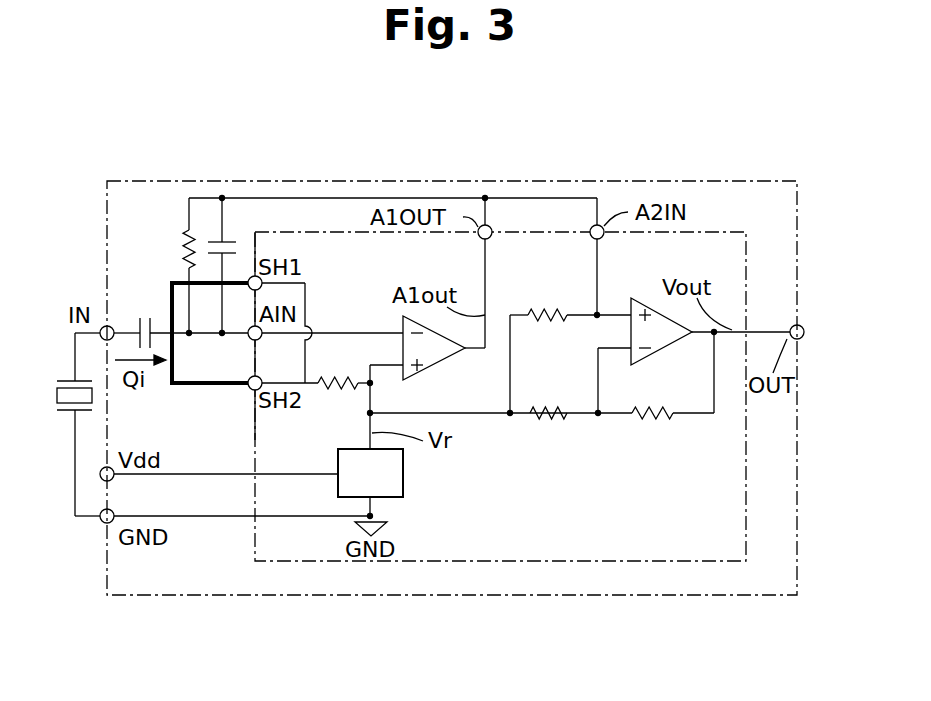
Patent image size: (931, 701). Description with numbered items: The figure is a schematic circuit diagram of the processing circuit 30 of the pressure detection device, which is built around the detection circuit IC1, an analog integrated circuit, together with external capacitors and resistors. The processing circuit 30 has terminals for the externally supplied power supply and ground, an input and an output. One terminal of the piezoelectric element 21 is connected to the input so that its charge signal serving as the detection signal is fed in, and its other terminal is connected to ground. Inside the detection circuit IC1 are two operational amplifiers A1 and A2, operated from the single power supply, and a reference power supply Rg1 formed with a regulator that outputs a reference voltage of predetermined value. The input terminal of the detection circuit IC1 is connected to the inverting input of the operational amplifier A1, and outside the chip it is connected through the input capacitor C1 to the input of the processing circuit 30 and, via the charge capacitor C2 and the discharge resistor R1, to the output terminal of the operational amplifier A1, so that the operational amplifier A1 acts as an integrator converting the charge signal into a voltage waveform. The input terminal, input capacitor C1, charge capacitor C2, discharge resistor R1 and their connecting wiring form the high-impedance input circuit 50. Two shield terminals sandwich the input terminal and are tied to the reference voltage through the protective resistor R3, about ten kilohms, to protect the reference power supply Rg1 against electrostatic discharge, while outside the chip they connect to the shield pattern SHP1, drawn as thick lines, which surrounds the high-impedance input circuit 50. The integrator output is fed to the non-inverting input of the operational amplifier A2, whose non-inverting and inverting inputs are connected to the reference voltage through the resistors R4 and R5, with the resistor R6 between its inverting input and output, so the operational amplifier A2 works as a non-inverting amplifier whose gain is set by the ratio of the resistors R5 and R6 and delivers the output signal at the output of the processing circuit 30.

The high-impedance input circuit 50 is at (168, 210).
The processing circuit 30 is at (625, 181).
The piezoelectric element 21 is at (67, 413).
The detection circuit IC1 is at (652, 561).
The input capacitor C1 is at (181, 321).
The charge capacitor C2 is at (232, 266).
The discharge resistor R1 is at (171, 267).
The shield pattern SHP1 is at (210, 386).
The protective resistor R3 is at (317, 370).
The resistor R4 is at (570, 349).
The resistor R5 is at (548, 429).
The resistor R6 is at (674, 390).
The operational amplifier A1 is at (444, 354).
The operational amplifier A2 is at (710, 336).
The reference power supply Rg1 is at (405, 483).